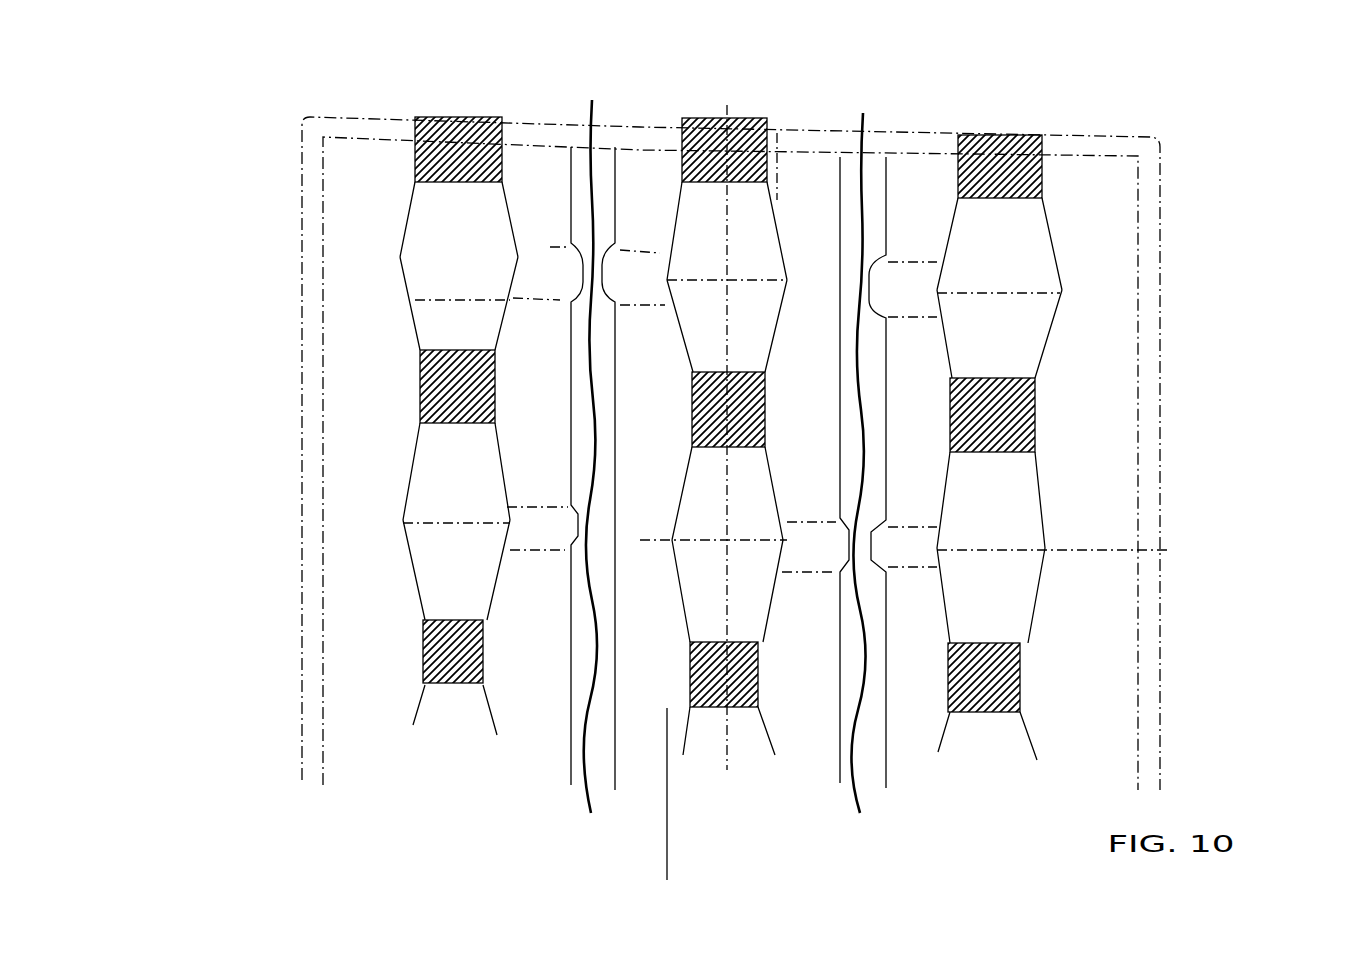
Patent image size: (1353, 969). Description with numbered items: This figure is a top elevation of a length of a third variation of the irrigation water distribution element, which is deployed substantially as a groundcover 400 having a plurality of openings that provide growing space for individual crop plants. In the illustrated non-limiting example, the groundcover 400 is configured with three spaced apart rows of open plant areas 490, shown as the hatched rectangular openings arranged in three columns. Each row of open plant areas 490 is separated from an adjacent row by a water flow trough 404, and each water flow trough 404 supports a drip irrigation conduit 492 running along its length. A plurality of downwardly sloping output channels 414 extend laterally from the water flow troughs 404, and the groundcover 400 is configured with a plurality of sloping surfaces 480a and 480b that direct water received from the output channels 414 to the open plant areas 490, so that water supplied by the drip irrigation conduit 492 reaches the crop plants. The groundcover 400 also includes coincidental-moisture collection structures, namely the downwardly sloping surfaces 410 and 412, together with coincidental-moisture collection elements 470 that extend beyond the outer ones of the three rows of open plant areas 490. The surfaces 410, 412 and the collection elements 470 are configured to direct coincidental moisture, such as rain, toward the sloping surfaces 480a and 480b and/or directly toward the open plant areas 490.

The groundcover 400 is at (290, 112).
The water flow trough 404 is at (600, 763).
The downwardly sloping surface 410 is at (803, 185).
The downwardly sloping surface 412 is at (918, 187).
The output channel 414 is at (623, 280).
The coincidental-moisture collection element 470 is at (360, 257).
The sloping surface 480a is at (445, 213).
The sloping surface 480b is at (443, 298).
The open plant area 490 is at (415, 147).
The drip irrigation conduit 492 is at (585, 738).